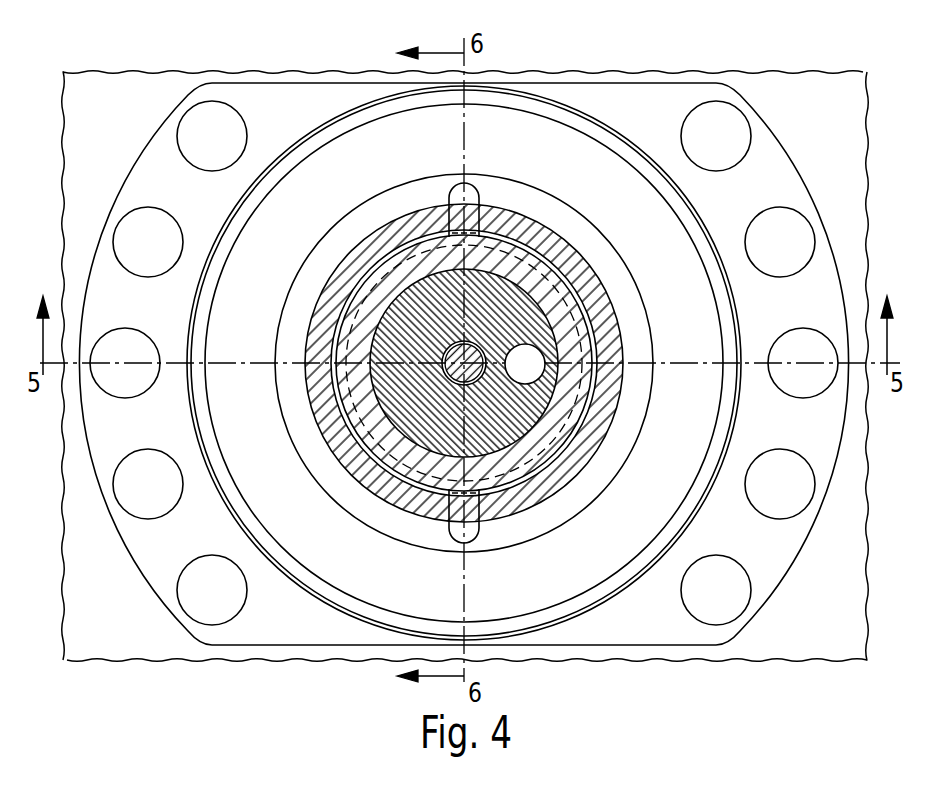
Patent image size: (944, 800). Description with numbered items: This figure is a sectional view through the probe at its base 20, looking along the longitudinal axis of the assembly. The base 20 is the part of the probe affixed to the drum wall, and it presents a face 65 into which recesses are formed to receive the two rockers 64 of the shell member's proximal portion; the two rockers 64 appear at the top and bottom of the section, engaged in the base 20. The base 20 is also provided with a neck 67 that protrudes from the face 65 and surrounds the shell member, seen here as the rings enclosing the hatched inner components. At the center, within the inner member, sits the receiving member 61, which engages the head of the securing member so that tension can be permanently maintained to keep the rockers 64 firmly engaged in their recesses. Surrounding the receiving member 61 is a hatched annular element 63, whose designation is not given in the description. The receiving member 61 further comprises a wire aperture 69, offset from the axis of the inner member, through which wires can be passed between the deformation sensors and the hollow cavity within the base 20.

The base 20 is at (765, 173).
The receiving member 61 is at (393, 325).
The bearing ring 63 is at (345, 400).
The rockers 64 is at (500, 206).
The face 65 is at (627, 310).
The neck 67 is at (287, 208).
The wire aperture 69 is at (547, 368).